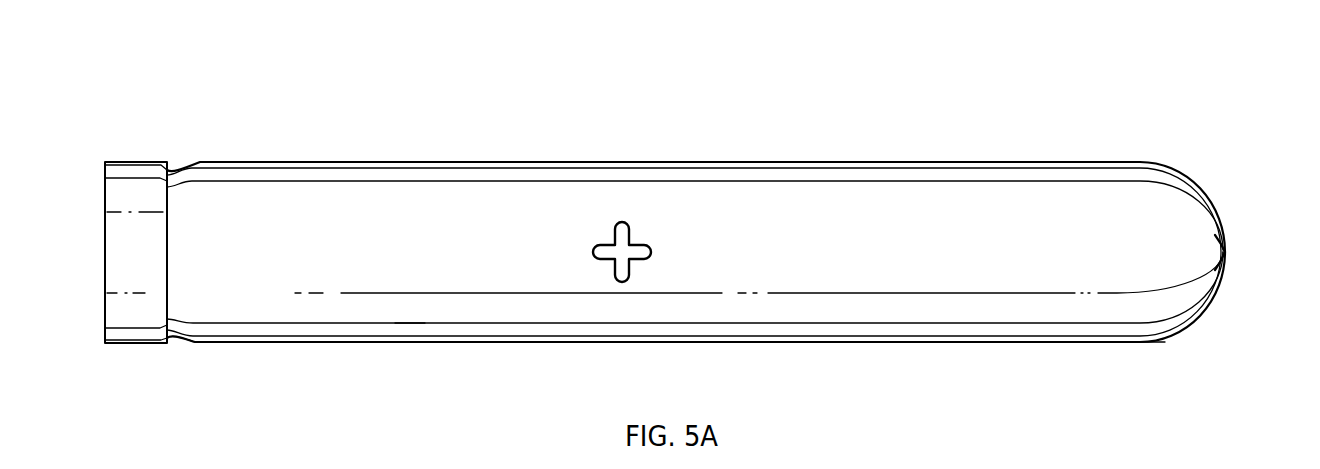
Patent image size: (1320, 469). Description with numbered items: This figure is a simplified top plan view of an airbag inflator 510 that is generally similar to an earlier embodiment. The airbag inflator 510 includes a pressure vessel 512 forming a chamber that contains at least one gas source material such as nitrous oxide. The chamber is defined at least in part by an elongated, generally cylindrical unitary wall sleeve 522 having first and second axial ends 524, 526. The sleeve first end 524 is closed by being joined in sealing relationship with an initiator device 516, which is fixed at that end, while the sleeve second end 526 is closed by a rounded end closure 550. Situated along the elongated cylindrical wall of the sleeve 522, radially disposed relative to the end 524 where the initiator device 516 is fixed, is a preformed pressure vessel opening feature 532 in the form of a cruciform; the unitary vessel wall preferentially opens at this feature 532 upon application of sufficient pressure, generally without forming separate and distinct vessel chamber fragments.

The airbag inflator 510 is at (970, 138).
The pressure vessel 512 is at (396, 181).
The initiator device 516 is at (142, 200).
The unitary wall sleeve 522 is at (410, 300).
The sleeve first axial end 524 is at (178, 345).
The sleeve second axial end 526 is at (1149, 344).
The preformed pressure vessel opening feature 532 is at (622, 237).
The rounded end closure 550 is at (1226, 252).